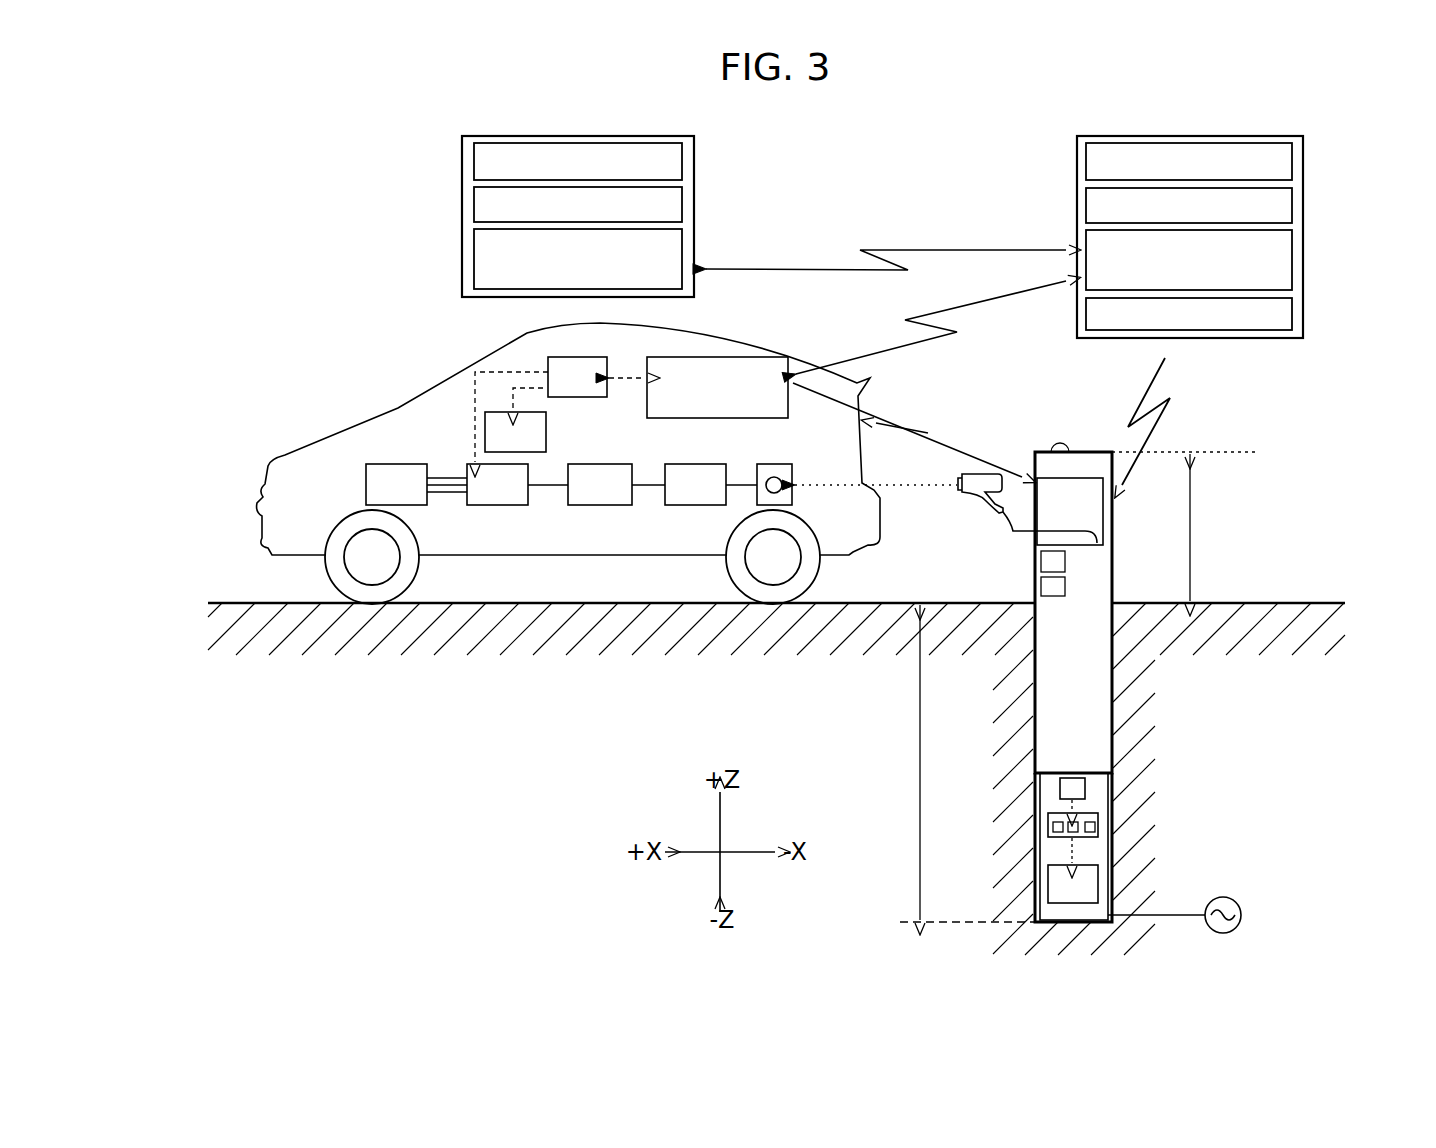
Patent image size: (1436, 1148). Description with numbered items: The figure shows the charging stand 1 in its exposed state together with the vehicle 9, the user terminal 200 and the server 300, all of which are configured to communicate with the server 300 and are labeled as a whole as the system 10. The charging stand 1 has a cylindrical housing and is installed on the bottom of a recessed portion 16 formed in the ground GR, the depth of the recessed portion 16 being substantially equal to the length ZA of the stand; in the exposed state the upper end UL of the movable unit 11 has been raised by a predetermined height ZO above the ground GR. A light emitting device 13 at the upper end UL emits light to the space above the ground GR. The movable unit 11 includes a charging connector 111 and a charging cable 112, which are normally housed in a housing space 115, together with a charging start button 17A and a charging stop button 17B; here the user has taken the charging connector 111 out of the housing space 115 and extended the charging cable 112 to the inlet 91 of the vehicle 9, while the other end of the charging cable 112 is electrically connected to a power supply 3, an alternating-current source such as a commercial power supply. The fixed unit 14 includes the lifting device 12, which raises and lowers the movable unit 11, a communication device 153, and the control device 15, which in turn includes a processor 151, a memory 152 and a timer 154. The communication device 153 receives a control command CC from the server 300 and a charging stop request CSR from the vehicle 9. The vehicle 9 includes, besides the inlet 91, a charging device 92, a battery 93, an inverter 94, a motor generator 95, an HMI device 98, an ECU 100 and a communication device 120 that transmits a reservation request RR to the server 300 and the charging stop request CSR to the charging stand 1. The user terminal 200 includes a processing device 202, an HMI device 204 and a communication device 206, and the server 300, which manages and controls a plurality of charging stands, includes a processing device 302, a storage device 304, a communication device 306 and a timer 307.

The user terminal 200 is at (696, 160).
The processing device 202 is at (474, 160).
The HMI device 204 is at (474, 206).
The communication device 206 is at (474, 260).
The server 300 is at (1077, 160).
The processing device 302 is at (1292, 162).
The storage device 304 is at (1292, 208).
The communication device 306 is at (1292, 268).
The timer 307 is at (1292, 315).
The vehicle 9 is at (568, 430).
The motor generator 95 is at (392, 464).
The inverter 94 is at (497, 505).
The battery 93 is at (600, 505).
The charging device 92 is at (693, 505).
The inlet 91 is at (776, 464).
The HMI device 98 is at (546, 432).
The ECU 100 is at (585, 397).
The communication device 120 is at (697, 418).
The charging system 10 is at (1026, 400).
The charging stand 1 is at (1086, 404).
The movable unit 11 is at (1088, 452).
The light emitting device 13 is at (1058, 448).
The housing space 115 is at (1092, 508).
The charging cable 112 is at (1075, 538).
The charging connector 111 is at (975, 495).
The charging start button 17A is at (1041, 562).
The charging stop button 17B is at (1041, 586).
The control device 15 is at (1077, 820).
The processor 151 is at (1055, 835).
The memory 152 is at (1070, 820).
The communication device 153 is at (1073, 776).
The timer 154 is at (1092, 835).
The lifting device 12 is at (1100, 884).
The recessed portion 16 is at (1035, 912).
The fixed unit 14 is at (1070, 920).
The power supply 3 is at (1236, 900).
The reservation request RR is at (1000, 240).
The upper end UL is at (1066, 448).
The control command CC is at (1165, 421).
The charging stop request CSR is at (907, 430).
The ground GR is at (893, 598).
The predetermined height ZO is at (1214, 527).
The length ZA is at (942, 762).